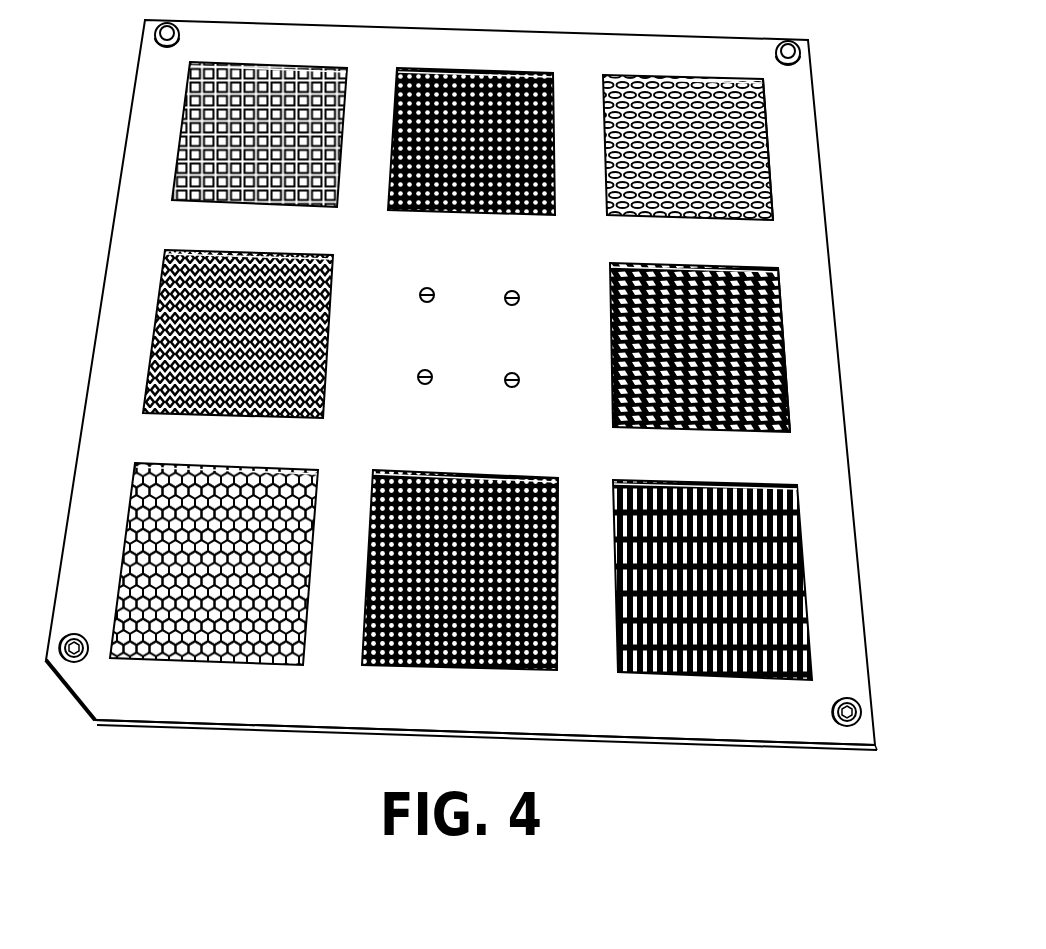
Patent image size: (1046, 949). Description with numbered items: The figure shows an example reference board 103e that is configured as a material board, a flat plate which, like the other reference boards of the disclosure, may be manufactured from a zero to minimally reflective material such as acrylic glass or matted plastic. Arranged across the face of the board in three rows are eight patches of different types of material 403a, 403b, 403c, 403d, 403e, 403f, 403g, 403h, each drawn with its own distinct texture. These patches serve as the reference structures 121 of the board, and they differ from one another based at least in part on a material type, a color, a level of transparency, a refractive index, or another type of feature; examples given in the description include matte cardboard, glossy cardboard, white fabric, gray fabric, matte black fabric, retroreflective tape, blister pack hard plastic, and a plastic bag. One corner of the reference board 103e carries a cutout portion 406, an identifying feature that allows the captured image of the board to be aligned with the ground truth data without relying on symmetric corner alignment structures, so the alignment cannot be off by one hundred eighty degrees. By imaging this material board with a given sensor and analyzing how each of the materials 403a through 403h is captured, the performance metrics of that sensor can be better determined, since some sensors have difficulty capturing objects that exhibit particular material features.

The reference board 103e is at (822, 785).
The cutout portion 406 is at (70, 710).
The reference structures 121 is at (772, 190).
The material 403a is at (288, 145).
The material 403b is at (503, 144).
The material 403c is at (705, 147).
The material 403d is at (270, 364).
The material 403e is at (725, 362).
The material 403f is at (230, 584).
The material 403g is at (487, 599).
The material 403h is at (743, 601).